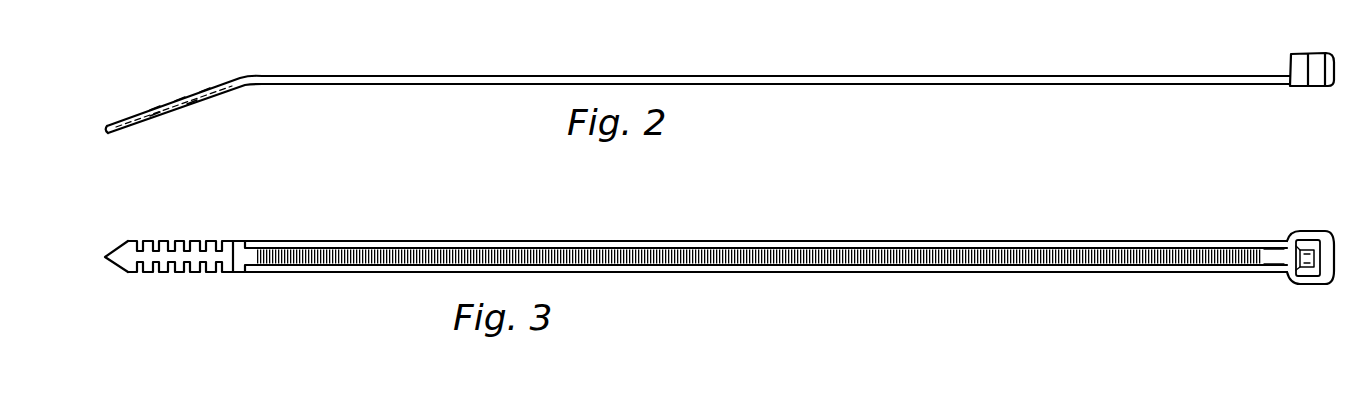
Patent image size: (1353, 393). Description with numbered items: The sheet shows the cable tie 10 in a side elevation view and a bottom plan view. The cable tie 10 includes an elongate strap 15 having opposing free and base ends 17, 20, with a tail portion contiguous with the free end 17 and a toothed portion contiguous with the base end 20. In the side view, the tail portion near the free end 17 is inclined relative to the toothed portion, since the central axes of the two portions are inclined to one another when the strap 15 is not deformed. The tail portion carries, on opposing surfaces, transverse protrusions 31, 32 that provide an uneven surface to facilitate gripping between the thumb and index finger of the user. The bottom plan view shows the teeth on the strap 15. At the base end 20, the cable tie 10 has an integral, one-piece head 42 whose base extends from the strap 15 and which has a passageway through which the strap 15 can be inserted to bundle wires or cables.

In FIG. 2, the cable tie 10 is at (1058, 55).
In FIG. 3, the cable tie 10 is at (1030, 226).
In FIG. 2, the elongate strap 15 is at (770, 55).
In FIG. 3, the elongate strap 15 is at (780, 221).
In FIG. 3, the free end 17 is at (120, 243).
In FIG. 3, the base end 20 is at (1276, 255).
In FIG. 2, the transverse protrusions 31 is at (156, 108).
In FIG. 2, the transverse protrusions 32 is at (204, 92).
In FIG. 3, the transverse protrusions 32 is at (203, 275).
In FIG. 2, the head 42 is at (1296, 37).
In FIG. 3, the head 42 is at (1322, 218).